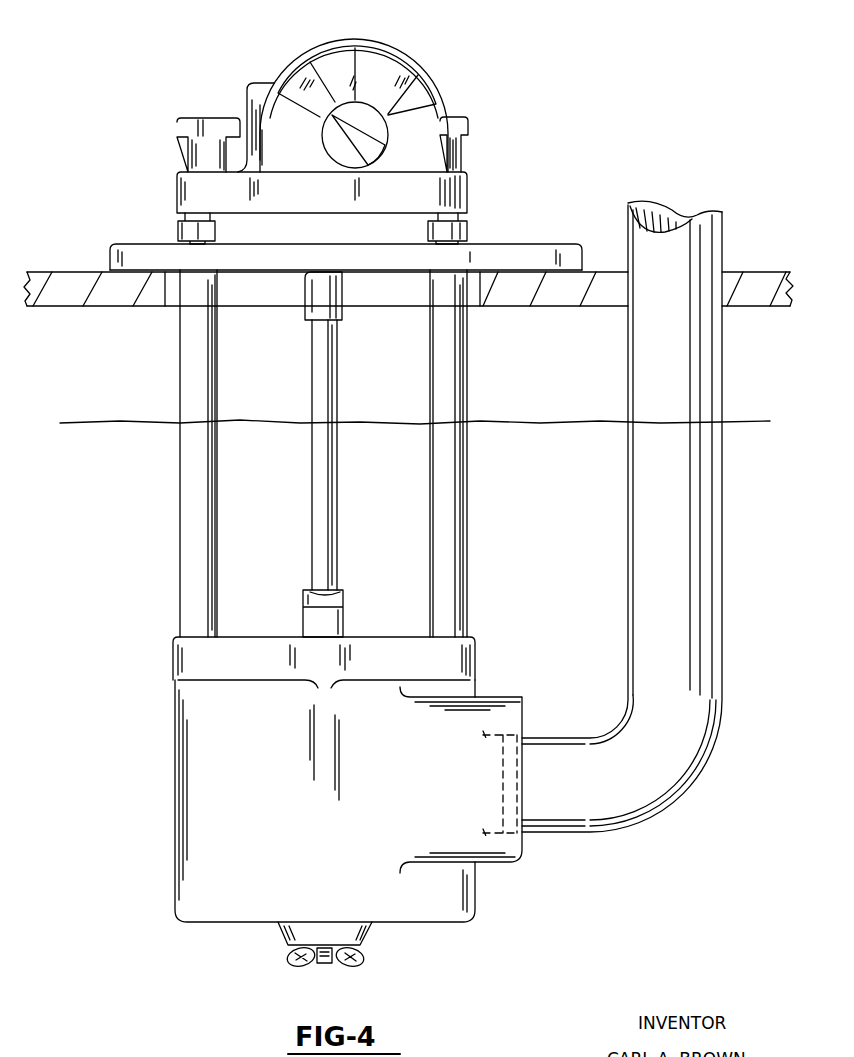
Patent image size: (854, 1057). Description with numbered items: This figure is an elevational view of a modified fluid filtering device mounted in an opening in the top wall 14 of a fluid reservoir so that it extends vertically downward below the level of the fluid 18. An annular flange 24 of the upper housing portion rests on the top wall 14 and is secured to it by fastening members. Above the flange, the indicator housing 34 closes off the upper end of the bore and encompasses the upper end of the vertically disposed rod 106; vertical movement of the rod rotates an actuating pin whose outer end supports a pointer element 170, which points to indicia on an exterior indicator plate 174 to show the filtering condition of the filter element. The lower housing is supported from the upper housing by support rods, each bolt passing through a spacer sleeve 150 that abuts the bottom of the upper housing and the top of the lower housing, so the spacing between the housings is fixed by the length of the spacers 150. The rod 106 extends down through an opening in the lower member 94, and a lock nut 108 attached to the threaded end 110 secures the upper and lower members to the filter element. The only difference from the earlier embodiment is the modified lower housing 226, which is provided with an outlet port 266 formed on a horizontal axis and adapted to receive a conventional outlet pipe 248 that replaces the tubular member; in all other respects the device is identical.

The top wall 14 is at (765, 270).
The fluid 18 is at (616, 400).
The annular flange 24 is at (583, 252).
The indicator housing 34 is at (260, 82).
The lower member 94 is at (367, 937).
The rod 106 is at (337, 378).
The lock nut 108 is at (357, 965).
The threaded end 110 is at (323, 962).
The spacer sleeve 150 is at (178, 371).
The pointer element 170 is at (437, 108).
The exterior indicator plate 174 is at (420, 76).
The modified lower housing 226 is at (486, 910).
The outlet pipe 248 is at (703, 698).
The outlet port 266 is at (527, 810).